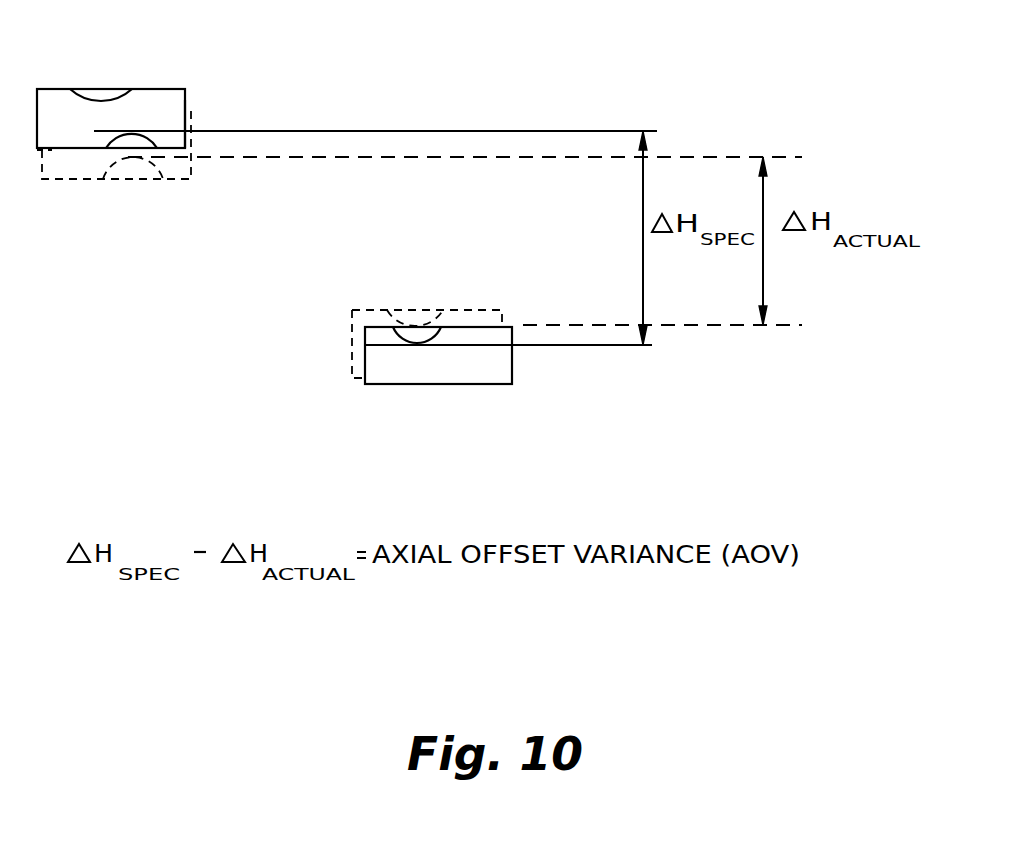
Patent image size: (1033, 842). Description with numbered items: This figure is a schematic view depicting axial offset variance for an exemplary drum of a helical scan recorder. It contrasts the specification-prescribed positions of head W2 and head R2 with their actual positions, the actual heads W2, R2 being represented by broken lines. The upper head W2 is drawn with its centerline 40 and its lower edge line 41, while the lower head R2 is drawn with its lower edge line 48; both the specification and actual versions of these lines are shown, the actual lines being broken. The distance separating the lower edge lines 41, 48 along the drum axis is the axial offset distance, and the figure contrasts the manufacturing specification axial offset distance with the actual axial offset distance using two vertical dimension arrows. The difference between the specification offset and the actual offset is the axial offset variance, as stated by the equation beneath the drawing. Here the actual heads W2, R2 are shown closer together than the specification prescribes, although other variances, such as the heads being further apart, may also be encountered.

The head W2 is at (50, 90).
The lower edge line of head W2 41 is at (322, 128).
The centerline of head W2 40 is at (315, 156).
The head R2 is at (365, 425).
The lower edge line of head R2 48 is at (562, 383).